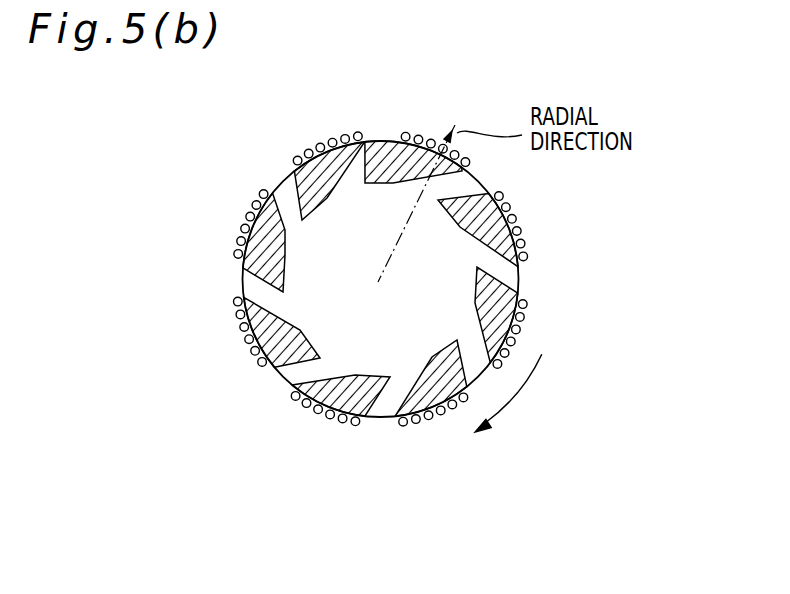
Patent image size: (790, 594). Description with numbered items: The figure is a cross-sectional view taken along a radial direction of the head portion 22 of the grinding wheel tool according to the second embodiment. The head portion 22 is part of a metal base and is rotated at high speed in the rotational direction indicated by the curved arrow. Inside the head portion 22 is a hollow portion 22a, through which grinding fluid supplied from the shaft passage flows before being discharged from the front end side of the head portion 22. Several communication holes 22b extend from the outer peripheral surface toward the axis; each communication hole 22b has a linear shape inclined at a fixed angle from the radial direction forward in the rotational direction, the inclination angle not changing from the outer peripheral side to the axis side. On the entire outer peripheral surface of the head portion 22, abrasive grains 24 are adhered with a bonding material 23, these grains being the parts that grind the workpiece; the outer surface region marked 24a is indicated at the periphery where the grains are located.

The head portion 22 is at (252, 174).
The hollow portion 22a is at (358, 235).
The communication hole 22b is at (243, 284).
The bonding material 23 is at (508, 209).
The abrasive grains 24 is at (496, 197).
The outer peripheral surface 24a is at (539, 246).